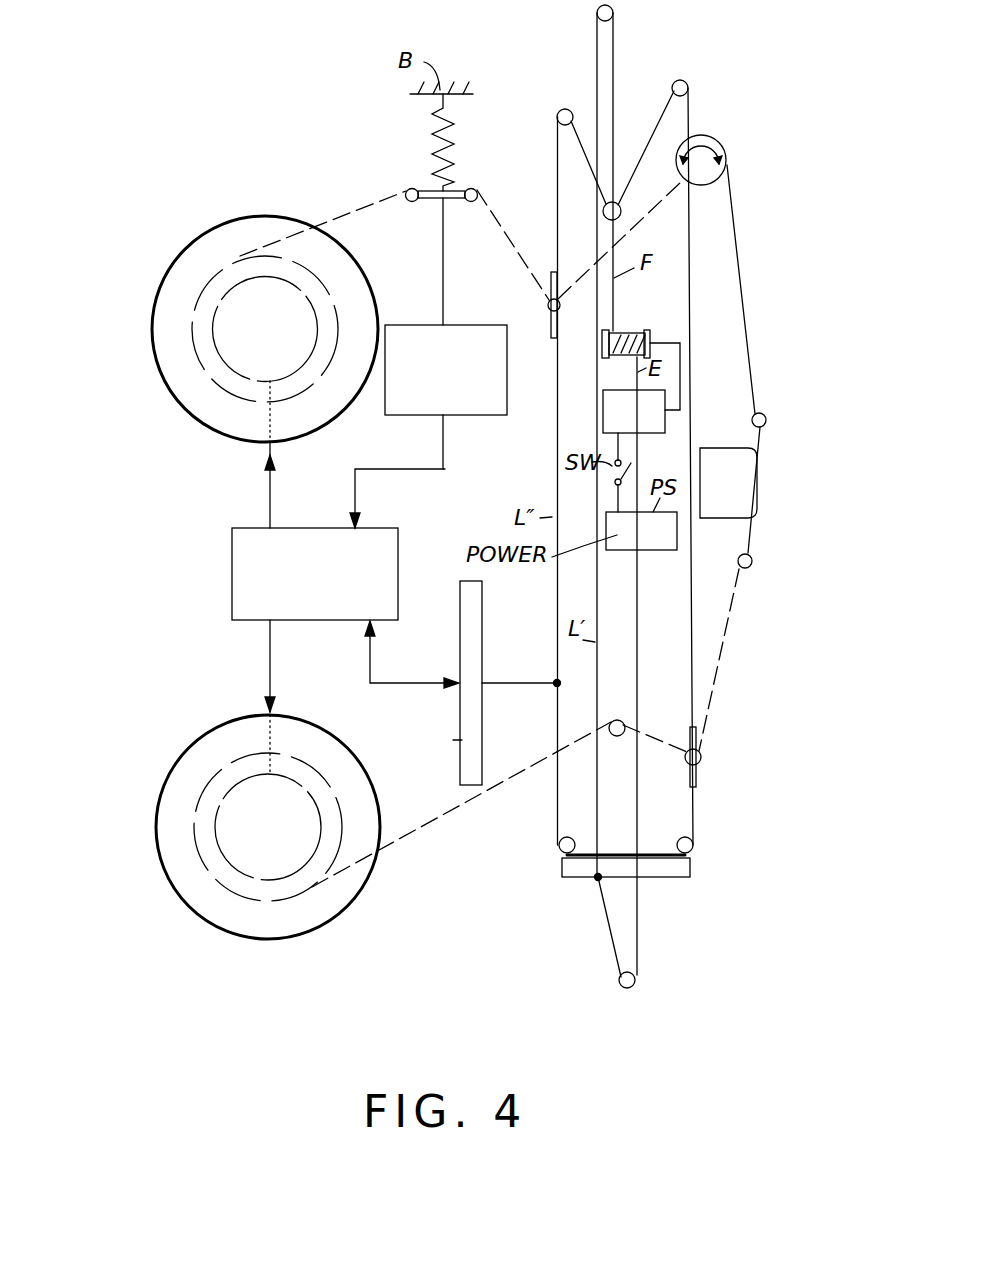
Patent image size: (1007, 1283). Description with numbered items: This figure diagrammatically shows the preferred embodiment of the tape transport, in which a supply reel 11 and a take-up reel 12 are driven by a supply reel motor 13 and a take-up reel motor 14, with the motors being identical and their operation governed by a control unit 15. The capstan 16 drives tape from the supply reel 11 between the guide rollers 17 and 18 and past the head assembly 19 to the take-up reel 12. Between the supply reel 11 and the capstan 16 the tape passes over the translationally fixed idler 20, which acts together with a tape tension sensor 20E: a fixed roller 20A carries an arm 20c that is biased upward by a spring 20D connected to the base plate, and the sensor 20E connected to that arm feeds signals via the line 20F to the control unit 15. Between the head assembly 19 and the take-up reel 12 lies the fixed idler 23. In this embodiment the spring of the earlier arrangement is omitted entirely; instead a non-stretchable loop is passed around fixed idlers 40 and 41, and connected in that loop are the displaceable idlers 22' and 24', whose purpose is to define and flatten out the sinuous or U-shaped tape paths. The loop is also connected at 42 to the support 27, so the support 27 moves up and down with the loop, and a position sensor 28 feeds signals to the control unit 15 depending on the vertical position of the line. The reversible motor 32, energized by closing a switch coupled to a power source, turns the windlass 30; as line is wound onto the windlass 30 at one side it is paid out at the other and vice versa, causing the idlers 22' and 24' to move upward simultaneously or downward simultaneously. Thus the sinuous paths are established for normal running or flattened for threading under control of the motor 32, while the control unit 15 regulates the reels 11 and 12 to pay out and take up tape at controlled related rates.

The supply reel 11 is at (187, 262).
The take-up reel 12 is at (185, 752).
The supply reel motor 13 is at (285, 373).
The take-up reel motor 14 is at (237, 867).
The control unit 15 is at (235, 595).
The capstan 16 is at (726, 150).
The guide roller 17 is at (763, 413).
The guide roller 18 is at (750, 566).
The head assembly 19 is at (717, 456).
The translationally fixed idler 20 is at (468, 202).
The fixed roller 20A is at (410, 189).
The arm 20c is at (425, 200).
The spring 20D is at (455, 121).
The tape tension sensor 20E is at (463, 418).
The line 20F is at (397, 472).
The displaceable idler 22' is at (523, 305).
The fixed idler 23 is at (622, 740).
The displaceable idler 24' is at (720, 757).
The support 27 is at (558, 886).
The position sensor 28 is at (478, 770).
The windlass 30 is at (650, 340).
The motor 32 is at (648, 423).
The fixed idler 40 is at (632, 985).
The fixed idler 41 is at (614, 13).
The connection point 42 is at (595, 883).